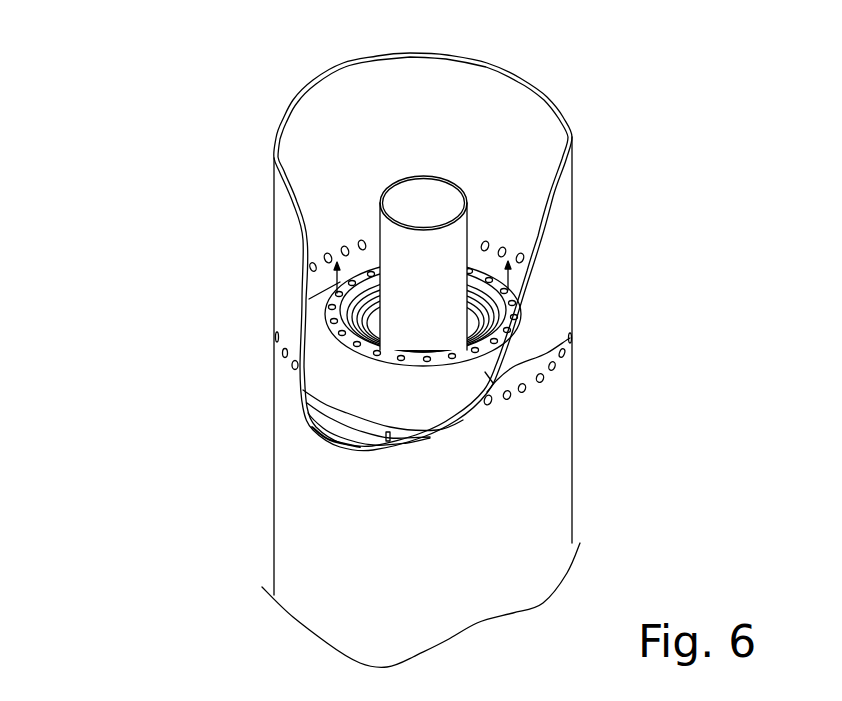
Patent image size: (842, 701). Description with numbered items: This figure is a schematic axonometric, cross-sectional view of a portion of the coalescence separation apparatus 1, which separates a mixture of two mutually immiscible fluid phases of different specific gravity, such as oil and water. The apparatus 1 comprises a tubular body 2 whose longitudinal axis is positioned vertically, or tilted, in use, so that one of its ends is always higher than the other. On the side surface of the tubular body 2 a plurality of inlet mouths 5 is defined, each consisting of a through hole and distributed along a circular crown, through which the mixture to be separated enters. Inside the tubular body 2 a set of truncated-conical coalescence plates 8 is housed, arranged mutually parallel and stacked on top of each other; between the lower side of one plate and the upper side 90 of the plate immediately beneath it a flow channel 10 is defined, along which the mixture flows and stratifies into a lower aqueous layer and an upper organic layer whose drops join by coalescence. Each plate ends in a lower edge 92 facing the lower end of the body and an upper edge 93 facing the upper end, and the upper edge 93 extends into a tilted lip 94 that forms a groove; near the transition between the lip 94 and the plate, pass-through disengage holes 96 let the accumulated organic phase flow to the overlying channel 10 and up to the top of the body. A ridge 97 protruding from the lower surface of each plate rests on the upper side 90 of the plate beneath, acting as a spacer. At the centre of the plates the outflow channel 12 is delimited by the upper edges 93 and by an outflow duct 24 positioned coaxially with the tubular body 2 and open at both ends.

The coalescence separation apparatus 1 is at (158, 600).
The tubular body 2 is at (558, 100).
The inlet mouth 5 is at (328, 256).
The coalescence plate 8 is at (520, 278).
The flow channel 10 is at (305, 418).
The outflow channel 12 is at (478, 257).
The outflow duct 24 is at (423, 177).
The upper side 90 is at (570, 343).
The lower edge 92 is at (309, 413).
The upper edge 93 is at (512, 287).
The lip 94 is at (329, 319).
The pass-through disengage hole 96 is at (309, 298).
The ridge 97 is at (360, 437).